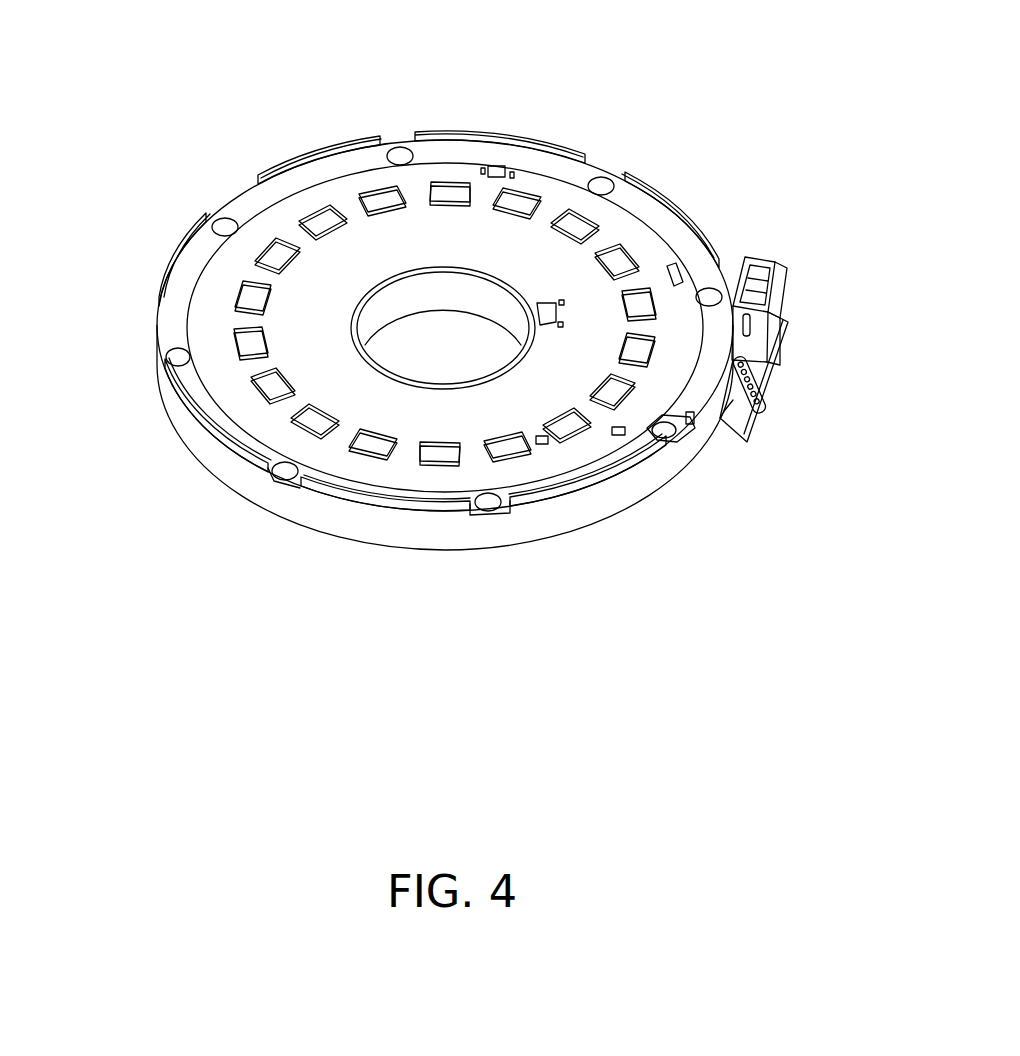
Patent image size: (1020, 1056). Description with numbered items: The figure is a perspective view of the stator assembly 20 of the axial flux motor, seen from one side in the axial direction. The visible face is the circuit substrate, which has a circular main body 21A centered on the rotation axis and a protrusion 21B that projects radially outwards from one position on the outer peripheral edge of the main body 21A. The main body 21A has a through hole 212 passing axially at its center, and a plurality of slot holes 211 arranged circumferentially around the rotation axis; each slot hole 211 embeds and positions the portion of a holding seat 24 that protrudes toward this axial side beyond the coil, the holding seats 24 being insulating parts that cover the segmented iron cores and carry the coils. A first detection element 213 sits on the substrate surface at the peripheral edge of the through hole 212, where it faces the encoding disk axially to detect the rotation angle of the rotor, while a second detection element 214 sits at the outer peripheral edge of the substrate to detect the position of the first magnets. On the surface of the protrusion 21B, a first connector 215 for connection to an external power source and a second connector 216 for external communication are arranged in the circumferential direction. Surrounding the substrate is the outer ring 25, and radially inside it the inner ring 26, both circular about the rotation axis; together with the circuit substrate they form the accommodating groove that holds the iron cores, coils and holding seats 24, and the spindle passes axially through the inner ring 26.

The stator assembly 20 is at (138, 807).
The main body 21A is at (262, 423).
The protrusion 21B is at (708, 435).
The slot holes 211 is at (238, 290).
The through hole 212 is at (493, 380).
The first detection element 213 is at (553, 305).
The second detection element 214 is at (502, 165).
The first connector 215 is at (782, 297).
The second connector 216 is at (760, 407).
The holding seat 24 is at (239, 298).
The outer ring 25 is at (258, 200).
The inner ring 26 is at (404, 277).